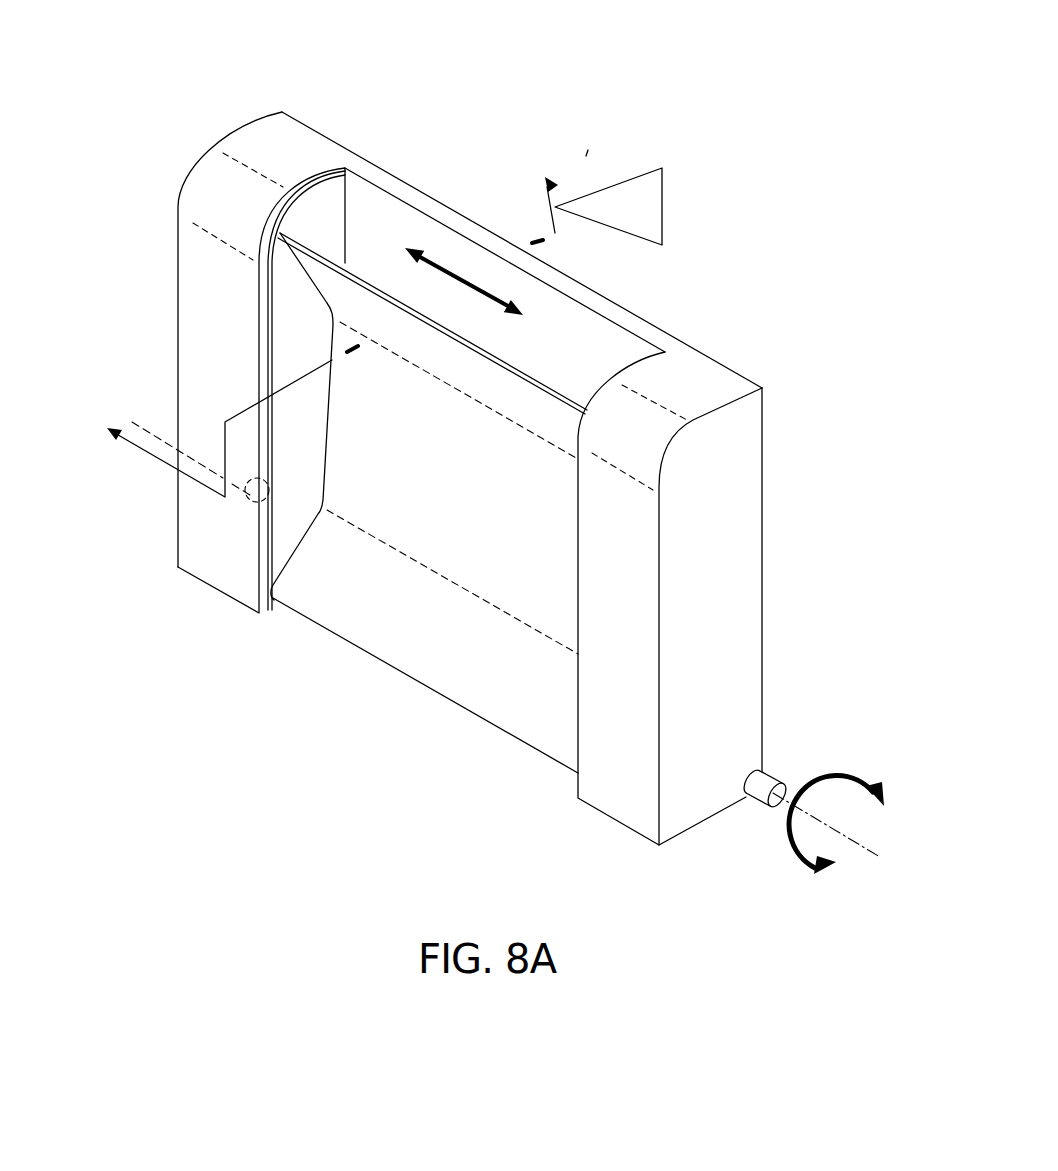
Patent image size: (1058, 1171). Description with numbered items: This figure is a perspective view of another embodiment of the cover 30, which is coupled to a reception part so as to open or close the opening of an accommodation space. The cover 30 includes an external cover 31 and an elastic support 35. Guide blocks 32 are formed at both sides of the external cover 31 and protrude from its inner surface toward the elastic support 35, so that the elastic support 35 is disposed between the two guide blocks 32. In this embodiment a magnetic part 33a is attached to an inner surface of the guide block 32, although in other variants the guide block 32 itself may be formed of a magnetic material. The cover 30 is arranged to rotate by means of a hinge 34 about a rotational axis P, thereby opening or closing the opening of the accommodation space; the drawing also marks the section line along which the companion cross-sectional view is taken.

The cover 30 is at (457, 33).
The external cover 31 is at (633, 320).
The guide block 32 is at (278, 162).
The magnetic part 33a is at (333, 223).
The hinge 34 is at (760, 790).
The elastic support 35 is at (440, 655).
The rotational axis P is at (860, 843).